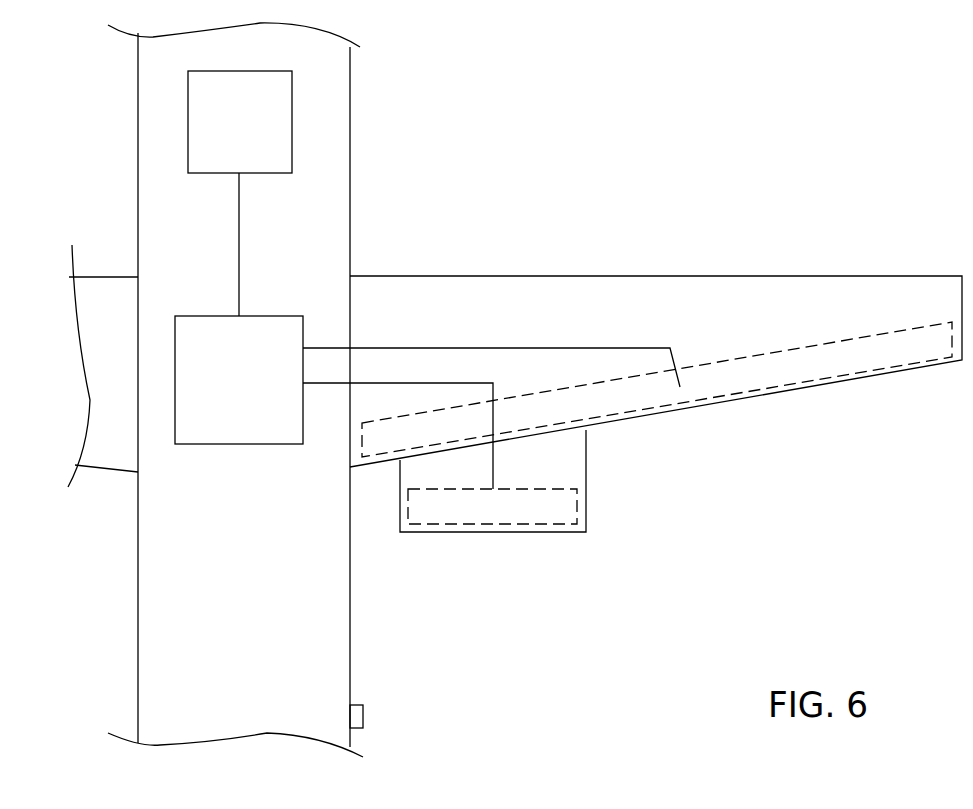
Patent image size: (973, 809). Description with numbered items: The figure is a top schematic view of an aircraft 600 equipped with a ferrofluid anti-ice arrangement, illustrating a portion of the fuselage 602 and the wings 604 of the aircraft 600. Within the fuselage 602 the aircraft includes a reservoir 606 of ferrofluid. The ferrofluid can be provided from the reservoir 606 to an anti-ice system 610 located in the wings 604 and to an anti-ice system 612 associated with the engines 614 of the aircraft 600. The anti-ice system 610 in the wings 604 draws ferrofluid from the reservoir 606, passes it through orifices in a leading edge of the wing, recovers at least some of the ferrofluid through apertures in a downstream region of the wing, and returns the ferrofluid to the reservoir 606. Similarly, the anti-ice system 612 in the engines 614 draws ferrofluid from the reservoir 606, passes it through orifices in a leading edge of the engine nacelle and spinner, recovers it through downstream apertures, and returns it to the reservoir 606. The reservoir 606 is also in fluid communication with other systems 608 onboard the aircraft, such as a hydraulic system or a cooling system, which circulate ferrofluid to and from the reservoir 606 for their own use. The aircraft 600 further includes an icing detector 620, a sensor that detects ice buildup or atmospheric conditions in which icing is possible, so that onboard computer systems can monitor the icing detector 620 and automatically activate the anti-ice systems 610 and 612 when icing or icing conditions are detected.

The aircraft 600 is at (528, 58).
The fuselage 602 is at (338, 658).
The wings 604 is at (108, 292).
The reservoir 606 is at (228, 430).
The other systems 608 is at (242, 82).
The anti-ice system 610 is at (773, 360).
The anti-ice system 612 is at (540, 510).
The engines 614 is at (573, 469).
The icing detector 620 is at (363, 717).